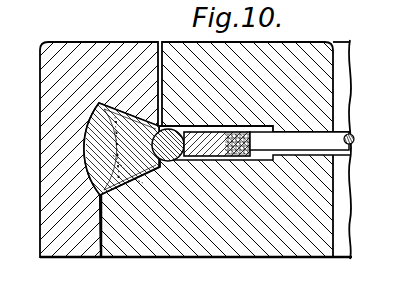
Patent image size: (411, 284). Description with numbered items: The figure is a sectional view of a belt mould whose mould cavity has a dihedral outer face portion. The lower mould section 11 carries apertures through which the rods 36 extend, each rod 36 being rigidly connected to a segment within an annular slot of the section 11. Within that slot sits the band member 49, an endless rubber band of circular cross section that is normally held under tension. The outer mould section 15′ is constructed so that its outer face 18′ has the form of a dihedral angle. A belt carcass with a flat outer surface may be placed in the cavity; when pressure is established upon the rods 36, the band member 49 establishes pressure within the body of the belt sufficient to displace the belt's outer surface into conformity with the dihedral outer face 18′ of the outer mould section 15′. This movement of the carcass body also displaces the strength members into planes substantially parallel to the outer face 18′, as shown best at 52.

The outer mould section 15′ is at (92, 63).
The lower mould section 11 is at (293, 57).
The outer face 18′ is at (90, 133).
The displaced strength members location 52 is at (137, 186).
The band member 49 is at (167, 129).
The rod 36 is at (313, 152).